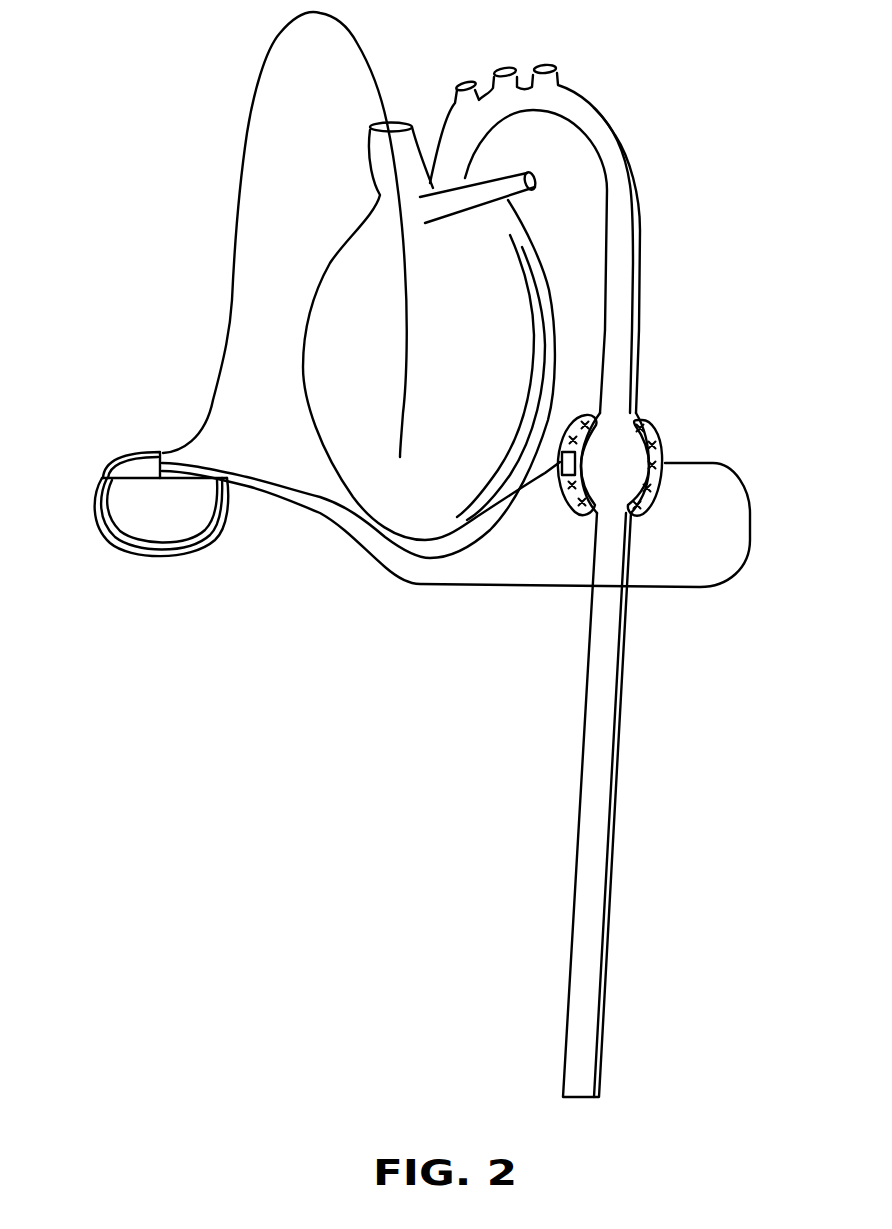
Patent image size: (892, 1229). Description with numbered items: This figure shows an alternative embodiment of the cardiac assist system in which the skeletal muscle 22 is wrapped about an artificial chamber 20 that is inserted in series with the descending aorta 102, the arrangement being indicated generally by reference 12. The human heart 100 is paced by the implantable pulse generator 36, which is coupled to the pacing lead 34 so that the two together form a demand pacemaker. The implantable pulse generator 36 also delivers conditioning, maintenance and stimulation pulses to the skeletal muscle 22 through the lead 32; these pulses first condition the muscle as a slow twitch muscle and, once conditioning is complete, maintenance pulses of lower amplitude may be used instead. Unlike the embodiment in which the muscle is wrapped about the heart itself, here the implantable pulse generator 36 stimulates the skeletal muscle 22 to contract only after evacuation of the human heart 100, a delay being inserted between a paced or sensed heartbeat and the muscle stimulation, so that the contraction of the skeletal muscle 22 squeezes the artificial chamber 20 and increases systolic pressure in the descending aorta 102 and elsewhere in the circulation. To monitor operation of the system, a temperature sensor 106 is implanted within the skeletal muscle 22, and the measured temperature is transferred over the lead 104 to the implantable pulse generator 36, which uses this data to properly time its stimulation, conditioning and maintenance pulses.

The aortic counterpulsation device 12 is at (685, 400).
The artificial chamber 20 is at (570, 500).
The skeletal muscle 22 is at (655, 453).
The lead 32 is at (418, 586).
The pacing lead 34 is at (243, 158).
The implantable pulse generator 36 is at (135, 517).
The human heart 100 is at (338, 392).
The descending aorta 102 is at (620, 288).
The lead 104 is at (473, 548).
The temperature sensor 106 is at (563, 456).